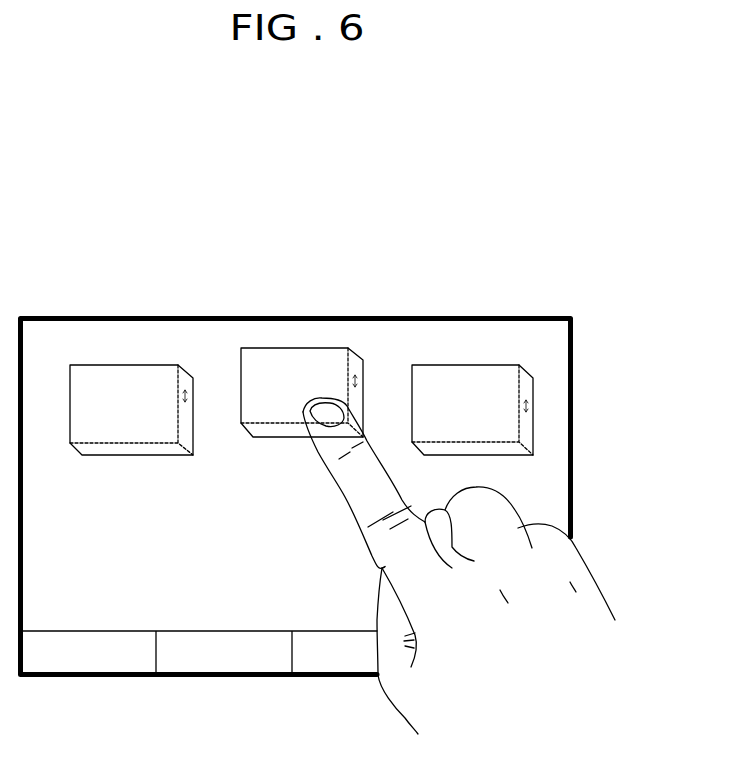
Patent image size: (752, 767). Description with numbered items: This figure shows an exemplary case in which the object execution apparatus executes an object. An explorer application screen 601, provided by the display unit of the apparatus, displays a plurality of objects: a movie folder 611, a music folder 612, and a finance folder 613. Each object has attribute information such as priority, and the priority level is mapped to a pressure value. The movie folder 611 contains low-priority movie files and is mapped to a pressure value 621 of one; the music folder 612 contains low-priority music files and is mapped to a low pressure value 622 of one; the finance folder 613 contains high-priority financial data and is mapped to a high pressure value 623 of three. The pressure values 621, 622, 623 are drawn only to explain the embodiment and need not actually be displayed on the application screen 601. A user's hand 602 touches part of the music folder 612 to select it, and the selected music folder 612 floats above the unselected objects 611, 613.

The application screen 601 is at (70, 318).
The user's hand / finger touch input 602 is at (587, 578).
The movie folder 611 is at (152, 365).
The music folder 612 is at (320, 348).
The finance folder 613 is at (496, 365).
The pressure value 621 is at (188, 396).
The pressure value 622 is at (358, 389).
The pressure value 623 is at (532, 404).